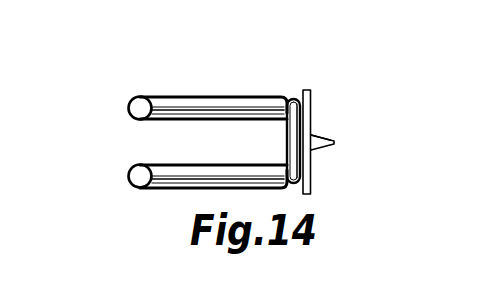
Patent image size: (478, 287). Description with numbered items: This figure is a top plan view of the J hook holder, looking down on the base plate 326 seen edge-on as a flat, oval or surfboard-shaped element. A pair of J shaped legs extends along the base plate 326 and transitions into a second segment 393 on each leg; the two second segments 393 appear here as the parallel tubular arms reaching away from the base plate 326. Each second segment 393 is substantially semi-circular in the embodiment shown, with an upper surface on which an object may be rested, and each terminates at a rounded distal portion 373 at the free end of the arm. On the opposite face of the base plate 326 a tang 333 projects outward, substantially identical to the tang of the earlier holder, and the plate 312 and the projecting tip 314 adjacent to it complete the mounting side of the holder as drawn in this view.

The second segment 393 is at (203, 103).
The end cap 373 is at (128, 106).
The base plate 326 is at (311, 104).
The mounting plate 312 is at (312, 152).
The projection tip 314 is at (335, 144).
The tang 333 is at (328, 136).